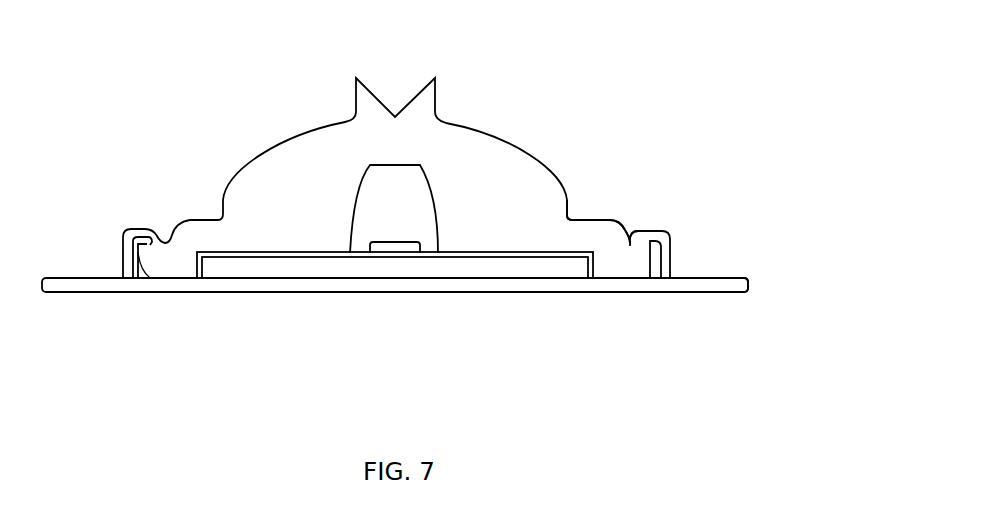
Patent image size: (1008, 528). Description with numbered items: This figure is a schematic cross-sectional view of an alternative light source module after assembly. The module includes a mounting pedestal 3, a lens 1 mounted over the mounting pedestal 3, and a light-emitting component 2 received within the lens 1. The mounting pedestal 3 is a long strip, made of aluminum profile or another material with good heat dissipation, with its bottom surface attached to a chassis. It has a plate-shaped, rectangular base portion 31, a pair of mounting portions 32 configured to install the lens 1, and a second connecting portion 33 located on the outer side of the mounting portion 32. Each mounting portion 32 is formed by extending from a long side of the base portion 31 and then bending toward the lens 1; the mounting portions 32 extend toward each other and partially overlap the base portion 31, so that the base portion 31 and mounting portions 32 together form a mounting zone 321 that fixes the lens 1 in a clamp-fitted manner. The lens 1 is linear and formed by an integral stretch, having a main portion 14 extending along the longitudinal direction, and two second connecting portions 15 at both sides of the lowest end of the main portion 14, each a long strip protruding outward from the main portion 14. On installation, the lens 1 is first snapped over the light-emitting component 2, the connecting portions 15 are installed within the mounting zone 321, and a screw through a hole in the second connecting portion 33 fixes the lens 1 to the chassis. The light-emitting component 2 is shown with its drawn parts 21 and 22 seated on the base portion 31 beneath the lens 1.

The lens 1 is at (458, 183).
The main portion 14 is at (529, 225).
The second connecting portion 15 is at (620, 262).
The light-emitting component 2 is at (273, 264).
The circuit board 21 is at (322, 264).
The electronic component 22 is at (383, 243).
The mounting pedestal 3 is at (574, 282).
The base portion 31 is at (606, 282).
The mounting portion 32 is at (670, 246).
The mounting zone 321 is at (642, 233).
The second connecting portion 33 is at (700, 283).